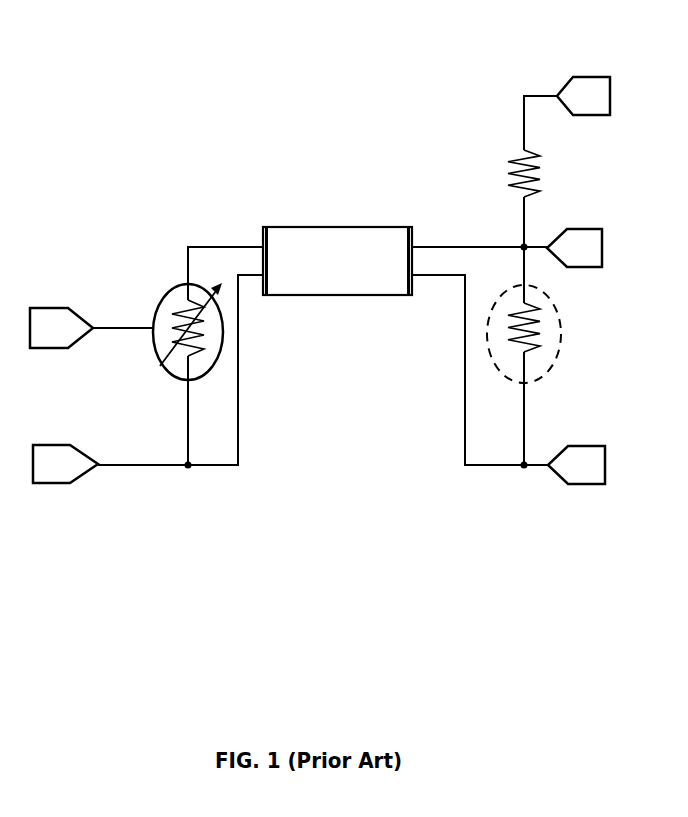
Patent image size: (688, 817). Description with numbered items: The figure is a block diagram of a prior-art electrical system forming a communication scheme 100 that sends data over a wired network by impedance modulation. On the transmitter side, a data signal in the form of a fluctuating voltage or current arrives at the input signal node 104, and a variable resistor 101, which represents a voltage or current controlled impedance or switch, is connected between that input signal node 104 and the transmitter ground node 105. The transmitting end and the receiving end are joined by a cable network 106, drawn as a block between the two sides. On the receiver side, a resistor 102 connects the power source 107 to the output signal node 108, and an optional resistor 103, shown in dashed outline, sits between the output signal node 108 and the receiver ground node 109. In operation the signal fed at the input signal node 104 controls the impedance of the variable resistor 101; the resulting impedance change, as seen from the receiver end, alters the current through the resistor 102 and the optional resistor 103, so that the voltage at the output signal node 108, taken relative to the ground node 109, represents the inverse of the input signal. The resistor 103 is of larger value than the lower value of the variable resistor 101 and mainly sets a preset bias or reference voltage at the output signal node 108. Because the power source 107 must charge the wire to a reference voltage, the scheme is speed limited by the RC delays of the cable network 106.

The communication scheme 100 is at (463, 71).
The variable resistor (R1) 101 is at (190, 292).
The resistor (R2) 102 is at (509, 184).
The resistor (R3) 103 is at (558, 328).
The input signal node (tx_in) 104 is at (47, 307).
The ground node (tx_vss) 105 is at (65, 482).
The cable network 106 is at (335, 297).
The power source (rx_vdd) 107 is at (572, 77).
The output signal node (rx_out) 108 is at (567, 229).
The ground node (rx_vss) 109 is at (570, 445).